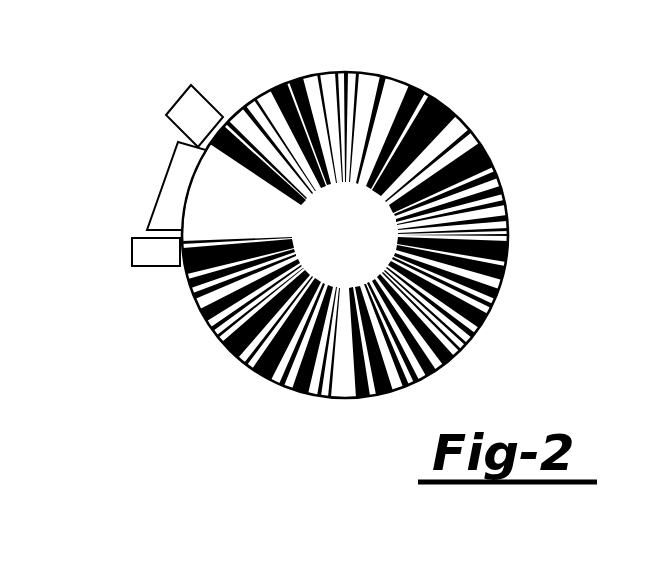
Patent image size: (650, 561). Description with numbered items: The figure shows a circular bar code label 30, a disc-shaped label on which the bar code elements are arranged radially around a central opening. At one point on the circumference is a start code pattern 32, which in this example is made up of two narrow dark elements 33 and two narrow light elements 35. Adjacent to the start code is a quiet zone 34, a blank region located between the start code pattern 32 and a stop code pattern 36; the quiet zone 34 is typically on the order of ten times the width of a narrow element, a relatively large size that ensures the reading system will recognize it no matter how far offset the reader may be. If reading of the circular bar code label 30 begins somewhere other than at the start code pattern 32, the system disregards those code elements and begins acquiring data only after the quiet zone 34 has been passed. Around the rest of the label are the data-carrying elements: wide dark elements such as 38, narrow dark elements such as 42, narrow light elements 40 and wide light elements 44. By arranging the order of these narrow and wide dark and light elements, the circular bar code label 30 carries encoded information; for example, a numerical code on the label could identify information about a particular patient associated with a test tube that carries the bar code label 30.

The circular bar code label 30 is at (248, 415).
The start code pattern 32 is at (132, 262).
The narrow dark elements 33 is at (194, 240).
The quiet zone 34 is at (160, 193).
The narrow light elements 35 is at (212, 240).
The stop code pattern 36 is at (182, 92).
The wide dark elements 38 is at (186, 270).
The narrow light elements 40 is at (190, 288).
The narrow dark elements 42 is at (196, 304).
The wide light elements 44 is at (236, 284).